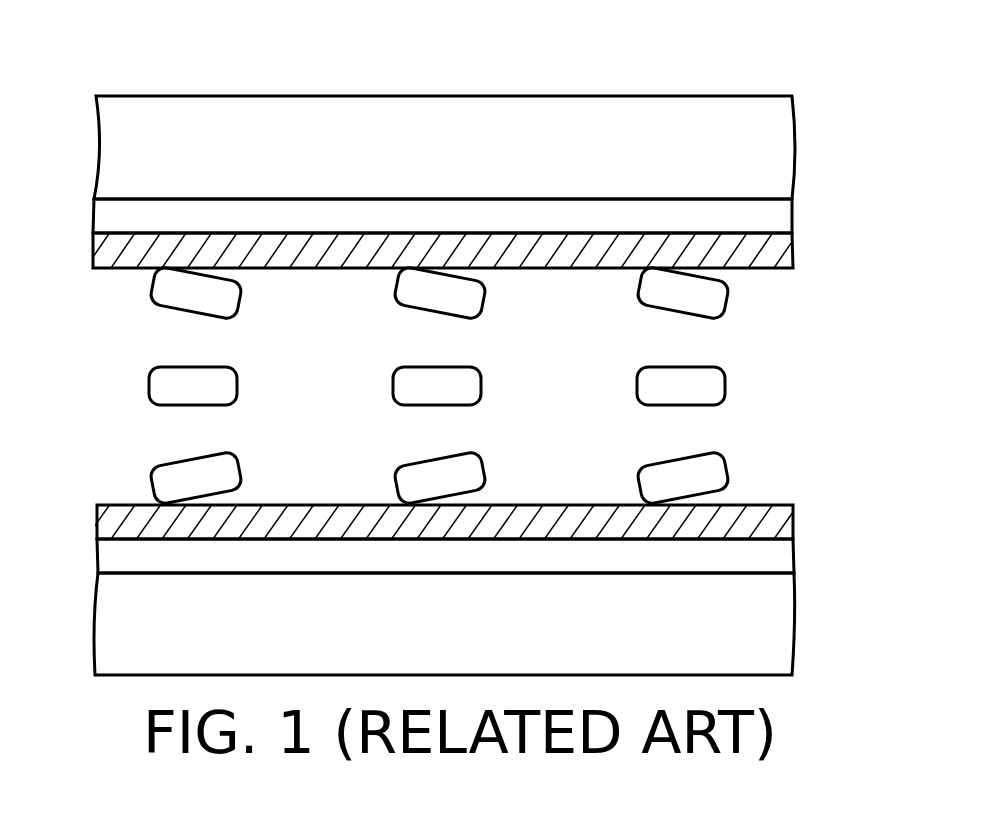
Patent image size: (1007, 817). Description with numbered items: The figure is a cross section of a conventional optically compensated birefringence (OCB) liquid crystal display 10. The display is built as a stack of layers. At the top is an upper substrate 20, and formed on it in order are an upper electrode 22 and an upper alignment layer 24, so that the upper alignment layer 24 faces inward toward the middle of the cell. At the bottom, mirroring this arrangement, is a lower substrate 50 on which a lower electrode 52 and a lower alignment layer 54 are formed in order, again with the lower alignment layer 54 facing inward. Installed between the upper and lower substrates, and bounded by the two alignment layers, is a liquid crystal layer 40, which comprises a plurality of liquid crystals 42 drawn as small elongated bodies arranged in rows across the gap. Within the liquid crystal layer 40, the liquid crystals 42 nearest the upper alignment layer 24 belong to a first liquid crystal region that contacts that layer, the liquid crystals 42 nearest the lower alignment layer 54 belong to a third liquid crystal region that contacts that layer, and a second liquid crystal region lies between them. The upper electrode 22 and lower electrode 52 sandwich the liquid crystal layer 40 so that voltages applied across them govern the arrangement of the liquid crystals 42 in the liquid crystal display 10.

The liquid crystal display 10 is at (77, 27).
The upper substrate 20 is at (773, 149).
The upper electrode 22 is at (773, 216).
The upper alignment layer 24 is at (773, 251).
The liquid crystal layer 40 is at (69, 267).
The liquid crystals 42 is at (710, 304).
The lower substrate 50 is at (773, 626).
The lower electrode 52 is at (773, 558).
The lower alignment layer 54 is at (773, 523).